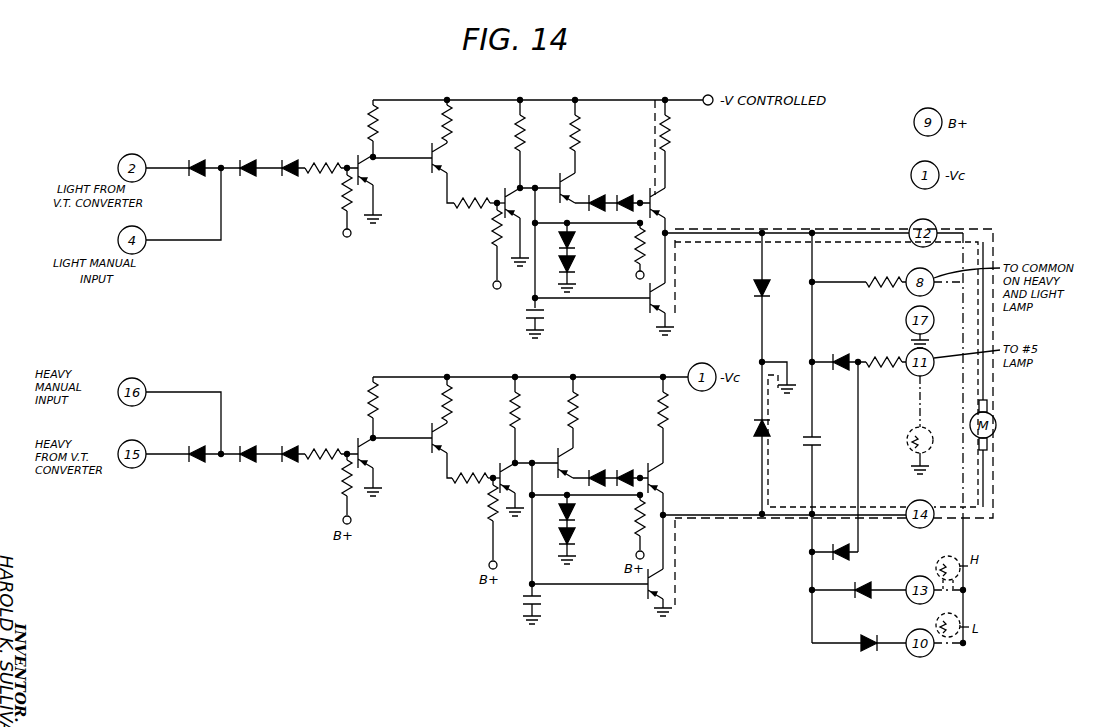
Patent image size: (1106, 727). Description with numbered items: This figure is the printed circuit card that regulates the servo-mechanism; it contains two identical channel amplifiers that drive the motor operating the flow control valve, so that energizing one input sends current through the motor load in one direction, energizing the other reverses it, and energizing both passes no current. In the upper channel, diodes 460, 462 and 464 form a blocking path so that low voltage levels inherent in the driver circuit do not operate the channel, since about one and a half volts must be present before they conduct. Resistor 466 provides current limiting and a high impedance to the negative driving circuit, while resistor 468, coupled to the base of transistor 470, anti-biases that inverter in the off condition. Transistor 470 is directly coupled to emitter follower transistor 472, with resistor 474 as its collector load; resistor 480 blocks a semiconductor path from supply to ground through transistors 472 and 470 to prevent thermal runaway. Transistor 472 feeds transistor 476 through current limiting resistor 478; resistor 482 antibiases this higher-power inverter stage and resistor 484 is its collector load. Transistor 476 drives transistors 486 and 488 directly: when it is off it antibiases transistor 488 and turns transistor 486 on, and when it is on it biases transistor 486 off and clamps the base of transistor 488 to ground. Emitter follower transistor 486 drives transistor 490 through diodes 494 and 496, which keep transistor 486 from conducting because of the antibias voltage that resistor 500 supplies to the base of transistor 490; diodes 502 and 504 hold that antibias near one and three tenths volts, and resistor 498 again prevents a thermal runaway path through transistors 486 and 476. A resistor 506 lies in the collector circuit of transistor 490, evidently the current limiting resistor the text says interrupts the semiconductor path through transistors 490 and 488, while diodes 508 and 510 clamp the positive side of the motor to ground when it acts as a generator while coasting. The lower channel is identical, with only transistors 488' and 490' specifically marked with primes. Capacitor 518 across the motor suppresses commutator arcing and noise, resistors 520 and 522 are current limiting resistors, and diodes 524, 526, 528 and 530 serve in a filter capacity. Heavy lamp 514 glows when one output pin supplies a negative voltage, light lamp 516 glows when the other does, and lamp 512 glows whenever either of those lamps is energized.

The diode 460 is at (199, 162).
The diode 462 is at (248, 159).
The diode 464 is at (290, 159).
The resistor 466 is at (324, 174).
The resistor 468 is at (326, 210).
The transistor 470 is at (372, 188).
The emitter follower transistor 472 is at (441, 174).
The collector load resistor 474 is at (368, 112).
The transistor 476 is at (507, 184).
The current limiting resistor 478 is at (468, 205).
The resistor 480 is at (443, 118).
The resistor 482 is at (490, 232).
The collector load resistor 484 is at (517, 126).
The emitter follower transistor 486 is at (576, 191).
The transistor 488 is at (643, 309).
The transistor 490 is at (679, 234).
The diode 494 is at (586, 208).
The diode 496 is at (626, 195).
The resistor 498 is at (574, 146).
The resistor 500 is at (635, 260).
The diode 502 is at (579, 241).
The diode 504 is at (579, 265).
The resistor 506 is at (675, 157).
The diode 508 is at (749, 283).
The diode 510 is at (752, 428).
The lamp 512 is at (910, 450).
The heavy lamp 514 is at (938, 559).
The light lamp 516 is at (934, 619).
The capacitor 518 is at (822, 445).
The current limiting resistor 520 is at (858, 282).
The current limiting resistor 522 is at (884, 367).
The diode 524 is at (841, 355).
The diode 526 is at (838, 556).
The diode 528 is at (856, 596).
The diode 530 is at (868, 647).
The transistor 488' is at (638, 593).
The transistor 490' is at (676, 516).